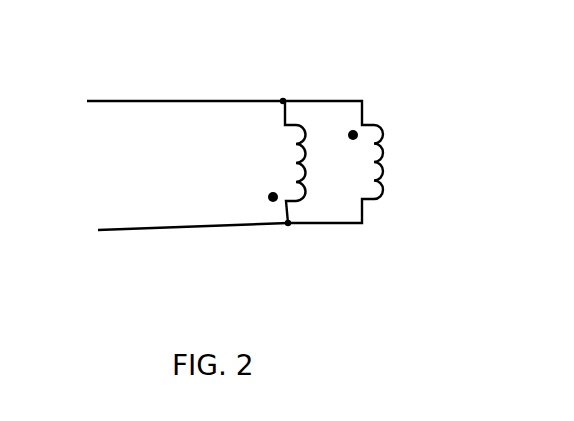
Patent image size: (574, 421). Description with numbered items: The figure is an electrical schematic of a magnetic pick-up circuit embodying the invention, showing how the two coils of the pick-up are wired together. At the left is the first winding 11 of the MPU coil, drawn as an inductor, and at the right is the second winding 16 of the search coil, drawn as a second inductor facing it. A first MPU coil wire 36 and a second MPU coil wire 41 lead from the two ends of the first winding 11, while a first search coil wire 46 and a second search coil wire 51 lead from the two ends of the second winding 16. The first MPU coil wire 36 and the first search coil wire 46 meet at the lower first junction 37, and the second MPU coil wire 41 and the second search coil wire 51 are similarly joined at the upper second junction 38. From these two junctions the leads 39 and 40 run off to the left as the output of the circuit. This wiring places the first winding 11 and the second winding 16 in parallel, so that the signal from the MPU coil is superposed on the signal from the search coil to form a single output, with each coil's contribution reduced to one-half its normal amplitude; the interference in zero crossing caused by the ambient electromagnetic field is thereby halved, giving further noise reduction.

The lead 40 is at (148, 101).
The lead 39 is at (162, 230).
The second junction 38 is at (283, 101).
The first junction 37 is at (288, 223).
The second MPU coil wire 41 is at (286, 112).
The second search coil wire 51 is at (363, 112).
The first winding 11 is at (264, 157).
The second winding 16 is at (398, 167).
The first MPU coil wire 36 is at (288, 212).
The first search coil wire 46 is at (365, 213).